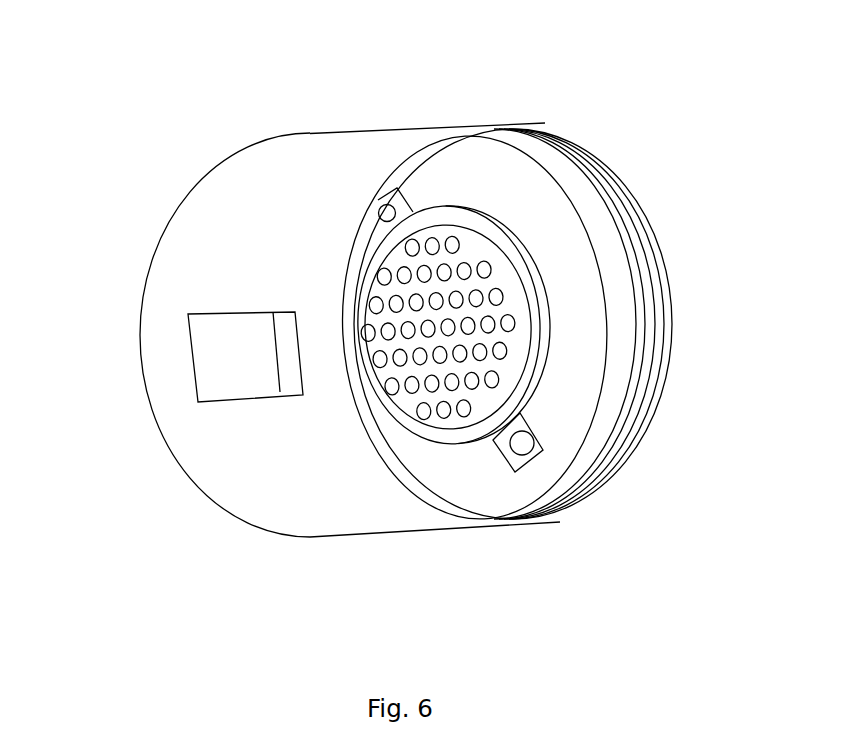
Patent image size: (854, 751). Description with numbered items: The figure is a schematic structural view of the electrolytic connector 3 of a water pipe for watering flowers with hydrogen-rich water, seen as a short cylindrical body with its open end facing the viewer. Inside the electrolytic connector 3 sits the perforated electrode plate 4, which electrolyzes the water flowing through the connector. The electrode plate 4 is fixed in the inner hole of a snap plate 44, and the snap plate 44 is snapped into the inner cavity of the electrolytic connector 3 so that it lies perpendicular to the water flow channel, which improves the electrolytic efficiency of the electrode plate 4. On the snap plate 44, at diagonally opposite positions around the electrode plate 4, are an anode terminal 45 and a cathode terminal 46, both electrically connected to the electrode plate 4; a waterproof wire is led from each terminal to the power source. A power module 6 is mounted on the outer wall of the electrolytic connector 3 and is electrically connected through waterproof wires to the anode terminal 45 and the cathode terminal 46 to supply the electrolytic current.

The electrolytic connector 3 is at (232, 233).
The electrode plate 4 is at (503, 312).
The power module 6 is at (212, 352).
The snap plate 44 is at (510, 192).
The anode terminal 45 is at (525, 450).
The cathode terminal 46 is at (383, 205).